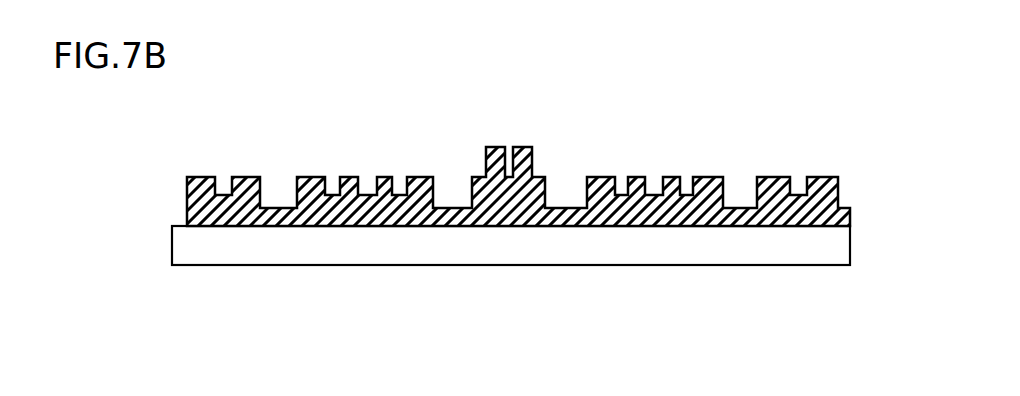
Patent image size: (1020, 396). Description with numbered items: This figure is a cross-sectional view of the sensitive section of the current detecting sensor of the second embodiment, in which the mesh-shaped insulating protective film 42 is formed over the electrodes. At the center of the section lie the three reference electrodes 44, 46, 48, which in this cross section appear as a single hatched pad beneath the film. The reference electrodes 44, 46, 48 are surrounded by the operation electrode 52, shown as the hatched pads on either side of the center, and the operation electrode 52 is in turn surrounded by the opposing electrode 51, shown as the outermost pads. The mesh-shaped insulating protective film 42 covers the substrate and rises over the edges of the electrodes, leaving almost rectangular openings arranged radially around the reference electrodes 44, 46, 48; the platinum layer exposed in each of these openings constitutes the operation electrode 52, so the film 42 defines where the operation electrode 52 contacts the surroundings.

The mesh-shaped insulating protective film 42 is at (838, 175).
The reference electrode 44 is at (516, 264).
The reference electrode 46 is at (516, 264).
The reference electrode 48 is at (507, 208).
The opposing electrode 51 is at (224, 208).
The operation electrode 52 is at (368, 208).